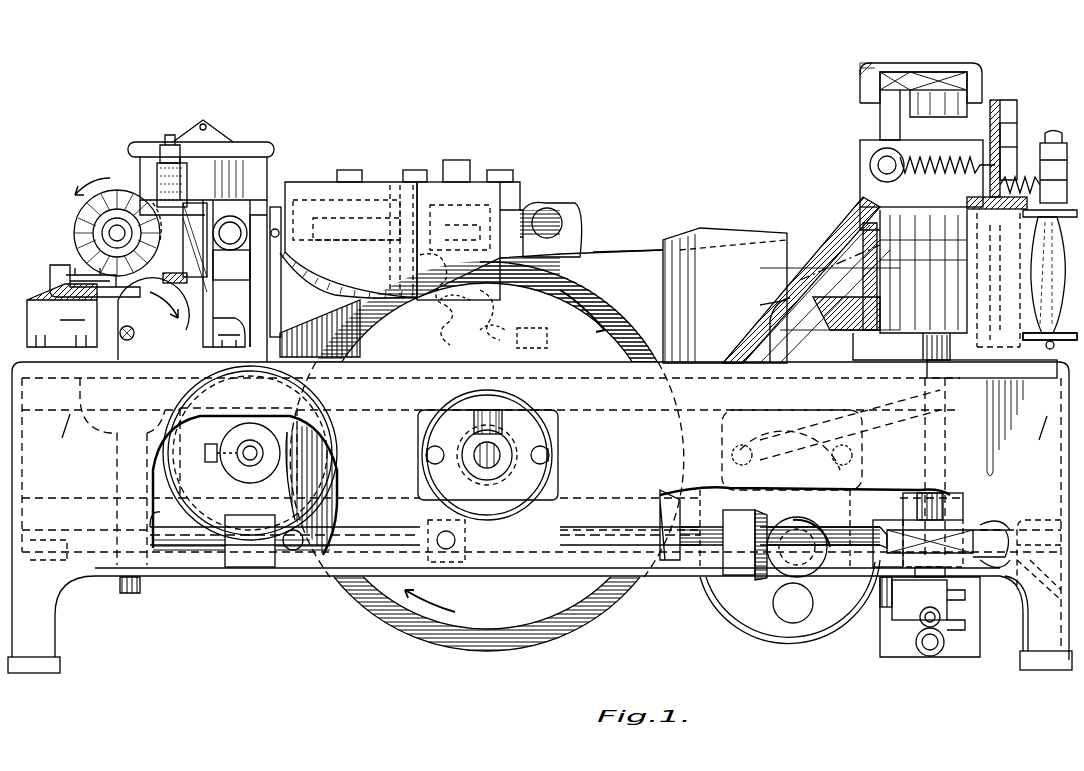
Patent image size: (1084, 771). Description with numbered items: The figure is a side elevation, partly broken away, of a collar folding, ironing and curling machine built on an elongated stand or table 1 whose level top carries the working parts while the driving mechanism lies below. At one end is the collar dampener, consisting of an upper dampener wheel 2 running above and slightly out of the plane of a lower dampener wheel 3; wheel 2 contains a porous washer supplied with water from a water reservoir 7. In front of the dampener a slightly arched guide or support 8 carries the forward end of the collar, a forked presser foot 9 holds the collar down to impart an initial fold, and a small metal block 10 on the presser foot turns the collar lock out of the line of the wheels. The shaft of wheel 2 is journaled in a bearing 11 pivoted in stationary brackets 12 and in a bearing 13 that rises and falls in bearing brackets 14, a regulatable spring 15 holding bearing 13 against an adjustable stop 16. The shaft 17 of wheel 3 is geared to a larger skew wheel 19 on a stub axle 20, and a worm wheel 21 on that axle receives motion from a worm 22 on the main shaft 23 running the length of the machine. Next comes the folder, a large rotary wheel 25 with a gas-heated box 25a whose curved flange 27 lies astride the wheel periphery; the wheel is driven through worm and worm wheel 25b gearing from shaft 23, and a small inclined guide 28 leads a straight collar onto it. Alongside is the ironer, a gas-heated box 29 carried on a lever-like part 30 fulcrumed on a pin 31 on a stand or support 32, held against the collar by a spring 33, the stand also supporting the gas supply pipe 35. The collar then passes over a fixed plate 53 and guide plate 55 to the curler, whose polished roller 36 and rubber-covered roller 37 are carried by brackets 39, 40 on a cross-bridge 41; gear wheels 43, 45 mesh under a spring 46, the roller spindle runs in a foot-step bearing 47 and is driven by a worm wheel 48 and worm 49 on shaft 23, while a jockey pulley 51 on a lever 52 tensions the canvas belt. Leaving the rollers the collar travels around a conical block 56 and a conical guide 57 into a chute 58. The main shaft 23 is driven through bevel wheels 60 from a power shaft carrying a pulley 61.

The stand or table 1 is at (540, 517).
The dampener wheel 2 is at (88, 222).
The dampener wheel 3 is at (153, 319).
The water reservoir 7 is at (201, 241).
The guide or support 8 is at (36, 310).
The presser foot 9 is at (50, 262).
The metal block 10 is at (85, 272).
The bearing 11 is at (247, 262).
The stationary brackets 12 is at (300, 302).
The bearing 13 is at (185, 265).
The bearing brackets 14 is at (222, 252).
The spring 15 is at (178, 190).
The adjustable stop 16 is at (177, 283).
The shaft 17 is at (228, 318).
The skew wheel 19 is at (328, 443).
The stub axle 20 is at (246, 458).
The worm wheel 21 is at (302, 410).
The worm 22 is at (248, 558).
The main shaft 23 is at (160, 527).
The rotary wheel 25 is at (603, 318).
The gas-heated box 25a is at (325, 182).
The worm and worm wheel 25b is at (460, 527).
The flange 27 is at (348, 275).
The guide 28 is at (362, 345).
The gas-heated box 29 is at (478, 192).
The lever-like part 30 is at (440, 212).
The pin 31 is at (408, 215).
The stand or support 32 is at (518, 319).
The spring 33 is at (460, 299).
The gas supply pipe 35 is at (553, 218).
The roller 36 is at (888, 323).
The roller 37 is at (1030, 345).
The bracket 39 is at (860, 147).
The bracket 40 is at (1022, 130).
The cross-bridge 41 is at (1000, 127).
The gear wheel 43 is at (970, 82).
The gear wheel 45 is at (878, 79).
The spring 46 is at (915, 175).
The foot-step bearing 47 is at (946, 640).
The worm wheel 48 is at (965, 530).
The worm 49 is at (950, 493).
The jockey or tensioning pulley 51 is at (1050, 283).
The lever 52 is at (1060, 143).
The fixed plate 53 is at (642, 250).
The guide plate 55 is at (752, 232).
The conical block 56 is at (830, 287).
The conical sheet metal guide 57 is at (835, 218).
The chute 58 is at (874, 468).
The bevel wheels 60 is at (790, 500).
The pulley 61 is at (718, 592).